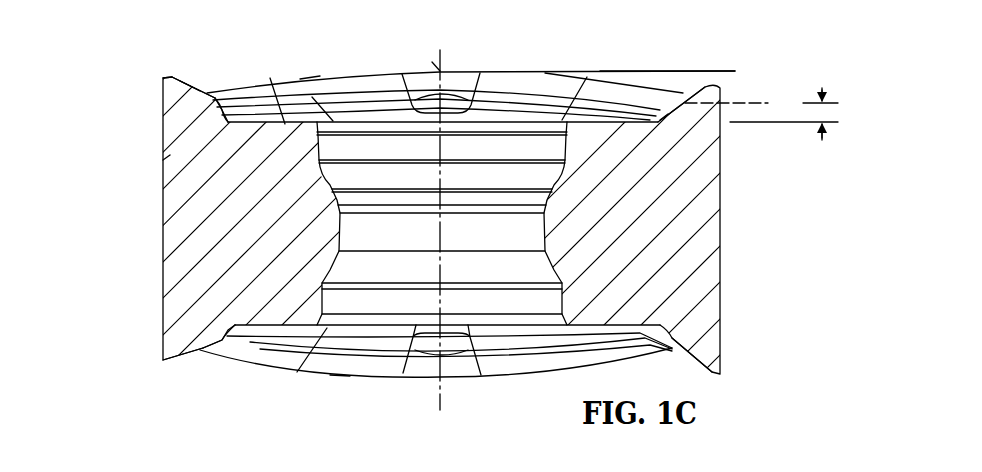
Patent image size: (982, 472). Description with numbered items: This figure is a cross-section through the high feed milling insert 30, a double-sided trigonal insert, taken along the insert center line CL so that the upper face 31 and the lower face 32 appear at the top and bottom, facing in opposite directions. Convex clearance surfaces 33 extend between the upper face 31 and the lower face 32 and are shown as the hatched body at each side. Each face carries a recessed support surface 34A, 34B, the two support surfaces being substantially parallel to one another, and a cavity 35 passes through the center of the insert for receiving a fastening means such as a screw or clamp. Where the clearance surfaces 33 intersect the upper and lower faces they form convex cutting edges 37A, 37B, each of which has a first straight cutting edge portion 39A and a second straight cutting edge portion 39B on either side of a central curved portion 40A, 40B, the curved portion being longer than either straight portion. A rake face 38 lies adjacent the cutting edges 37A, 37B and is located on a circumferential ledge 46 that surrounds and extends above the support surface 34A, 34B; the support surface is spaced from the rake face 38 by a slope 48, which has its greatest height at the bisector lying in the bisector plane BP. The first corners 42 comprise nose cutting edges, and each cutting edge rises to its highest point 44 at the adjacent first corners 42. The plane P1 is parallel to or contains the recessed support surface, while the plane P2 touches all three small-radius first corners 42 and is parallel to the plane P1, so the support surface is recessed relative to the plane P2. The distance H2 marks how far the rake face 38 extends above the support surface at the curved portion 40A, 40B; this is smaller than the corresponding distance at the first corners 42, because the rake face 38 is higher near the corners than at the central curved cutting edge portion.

The high feed milling insert 30 is at (126, 60).
The upper face 31 is at (306, 66).
The lower face 32 is at (337, 388).
The convex clearance surface 33 is at (738, 228).
The recessed support surface 34A is at (285, 124).
The recessed support surface 34B is at (503, 327).
The cavity 35 is at (333, 180).
The convex cutting edge 37A is at (163, 78).
The convex cutting edge 37B is at (163, 361).
The rake face 38 is at (188, 80).
The first straight cutting edge portion 39A is at (533, 72).
The second straight cutting edge portion 39B is at (343, 80).
The curved cutting edge portion 40A is at (216, 94).
The curved cutting edge portion 40B is at (200, 353).
The first corner 42 is at (431, 60).
The highest point 44 is at (447, 67).
The circumferential ledge 46 is at (186, 103).
The slope 48 is at (167, 160).
The insert center line CL is at (441, 60).
The bisector plane BP is at (440, 396).
The plane P1 is at (793, 123).
The plane P2 is at (735, 71).
The distance H2 is at (838, 114).